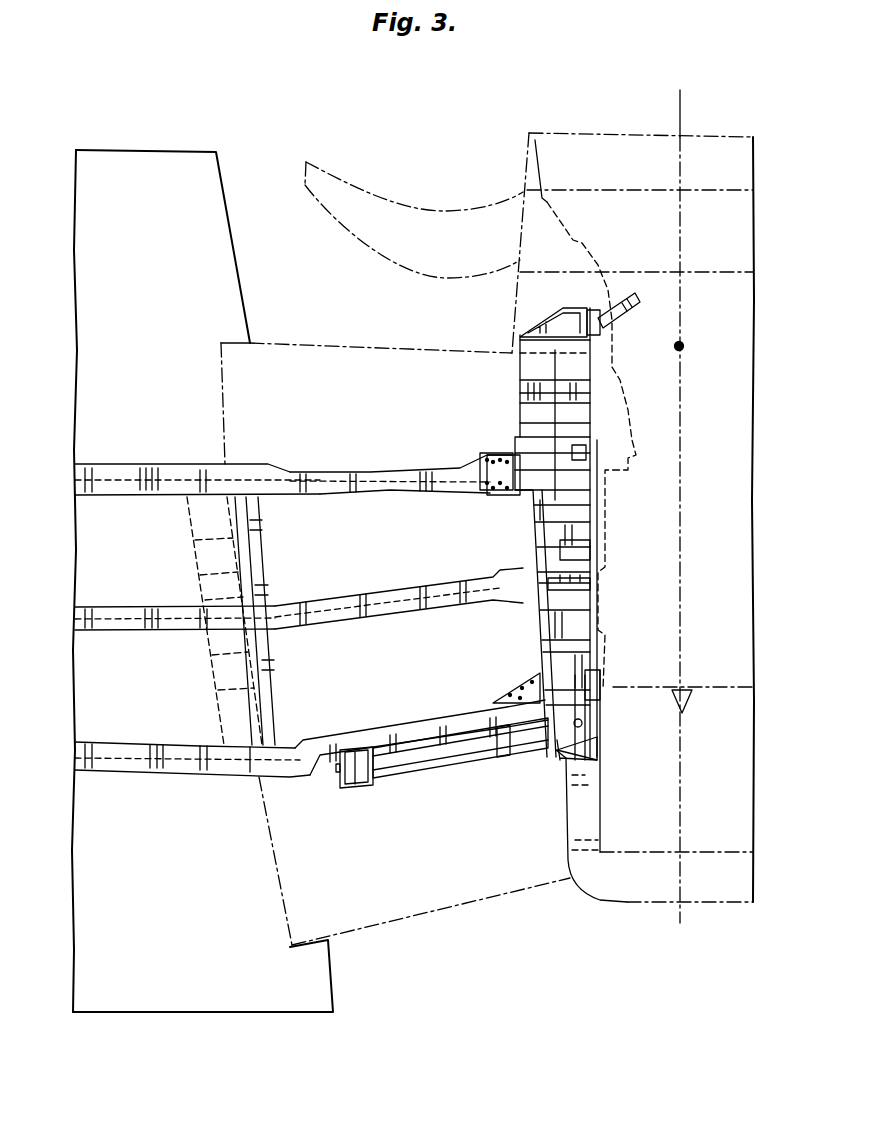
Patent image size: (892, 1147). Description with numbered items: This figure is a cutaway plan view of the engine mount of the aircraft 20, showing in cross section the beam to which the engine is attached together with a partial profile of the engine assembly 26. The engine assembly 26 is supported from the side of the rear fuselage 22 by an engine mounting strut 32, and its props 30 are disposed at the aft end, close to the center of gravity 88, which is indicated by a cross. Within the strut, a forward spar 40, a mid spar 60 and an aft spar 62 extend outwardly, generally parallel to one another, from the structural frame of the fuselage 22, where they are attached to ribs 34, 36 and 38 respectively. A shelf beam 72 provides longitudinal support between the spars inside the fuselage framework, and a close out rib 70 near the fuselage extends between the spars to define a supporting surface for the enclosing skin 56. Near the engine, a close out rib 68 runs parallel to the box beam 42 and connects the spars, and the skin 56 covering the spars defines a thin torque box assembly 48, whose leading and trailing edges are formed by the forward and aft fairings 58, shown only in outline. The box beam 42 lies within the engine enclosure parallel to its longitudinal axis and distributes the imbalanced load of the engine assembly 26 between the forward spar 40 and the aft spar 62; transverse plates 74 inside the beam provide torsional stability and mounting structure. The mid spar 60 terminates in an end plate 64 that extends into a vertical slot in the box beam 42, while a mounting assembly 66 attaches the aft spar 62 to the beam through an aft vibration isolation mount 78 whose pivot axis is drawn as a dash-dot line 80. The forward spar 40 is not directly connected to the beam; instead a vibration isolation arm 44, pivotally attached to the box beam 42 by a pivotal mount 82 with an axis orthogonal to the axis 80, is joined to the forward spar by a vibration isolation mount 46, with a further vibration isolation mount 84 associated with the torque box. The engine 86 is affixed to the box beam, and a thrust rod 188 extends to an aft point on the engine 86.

The passenger-type aircraft 20 is at (340, 973).
The fuselage 22 is at (202, 581).
The engine assembly 26 is at (622, 905).
The props 30 is at (400, 210).
The engine mounting strut 32 is at (480, 900).
The rib 34 is at (100, 772).
The rib 36 is at (85, 633).
The rib 38 is at (83, 497).
The forward spar 40 is at (317, 753).
The box beam 42 is at (598, 538).
The vibration isolation arm 44 is at (443, 757).
The vibration isolation mount 46 is at (362, 787).
The torque box assembly 48 is at (325, 466).
The enclosing skin 56 is at (395, 591).
The forward and aft fairings 58 is at (395, 644).
The mid spar 60 is at (347, 615).
The aft spar 62 is at (325, 498).
The end plate 64 is at (577, 583).
The mounting assembly 66 is at (530, 462).
The close out rib 68 is at (513, 650).
The close out rib 70 is at (275, 688).
The shelf beam 72 is at (217, 593).
The transverse plates 74 is at (568, 425).
The aft vibration isolation mount 78 is at (578, 452).
The axis of rotation 80 is at (557, 368).
The pivotal mount 82 is at (588, 723).
The vibration isolation mount 84 is at (535, 760).
The engine 86 is at (637, 457).
The center of gravity 88 is at (684, 340).
The thrust rod 188 is at (620, 297).